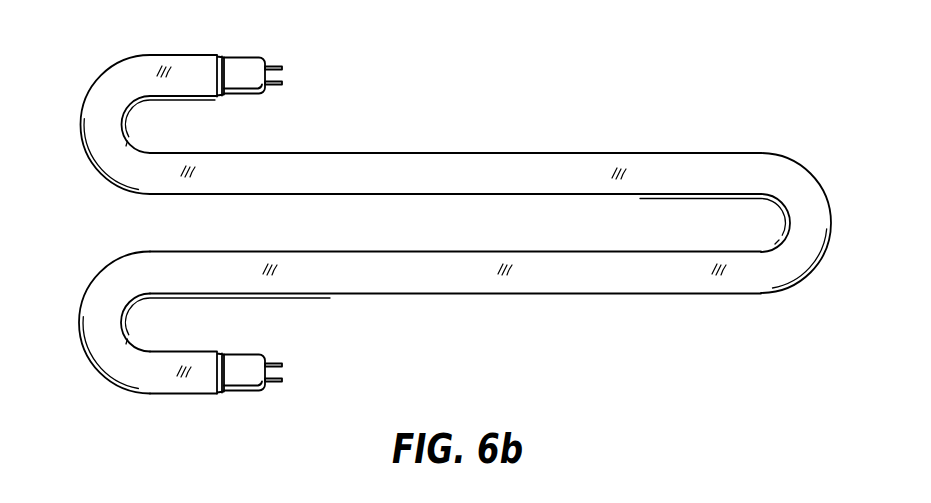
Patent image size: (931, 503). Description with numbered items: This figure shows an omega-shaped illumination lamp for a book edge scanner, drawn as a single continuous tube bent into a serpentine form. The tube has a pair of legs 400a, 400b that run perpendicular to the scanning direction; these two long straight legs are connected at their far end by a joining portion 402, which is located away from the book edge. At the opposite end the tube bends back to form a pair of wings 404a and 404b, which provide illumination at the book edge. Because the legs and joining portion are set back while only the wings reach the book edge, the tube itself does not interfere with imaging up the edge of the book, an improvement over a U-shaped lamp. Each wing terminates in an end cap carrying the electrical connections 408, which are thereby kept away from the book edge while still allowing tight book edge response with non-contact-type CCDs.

The leg 400a is at (417, 162).
The leg 400b is at (415, 283).
The joining portion 402 is at (822, 222).
The wing 404a is at (92, 125).
The wing 404b is at (92, 325).
The electrical connections 408 is at (252, 77).